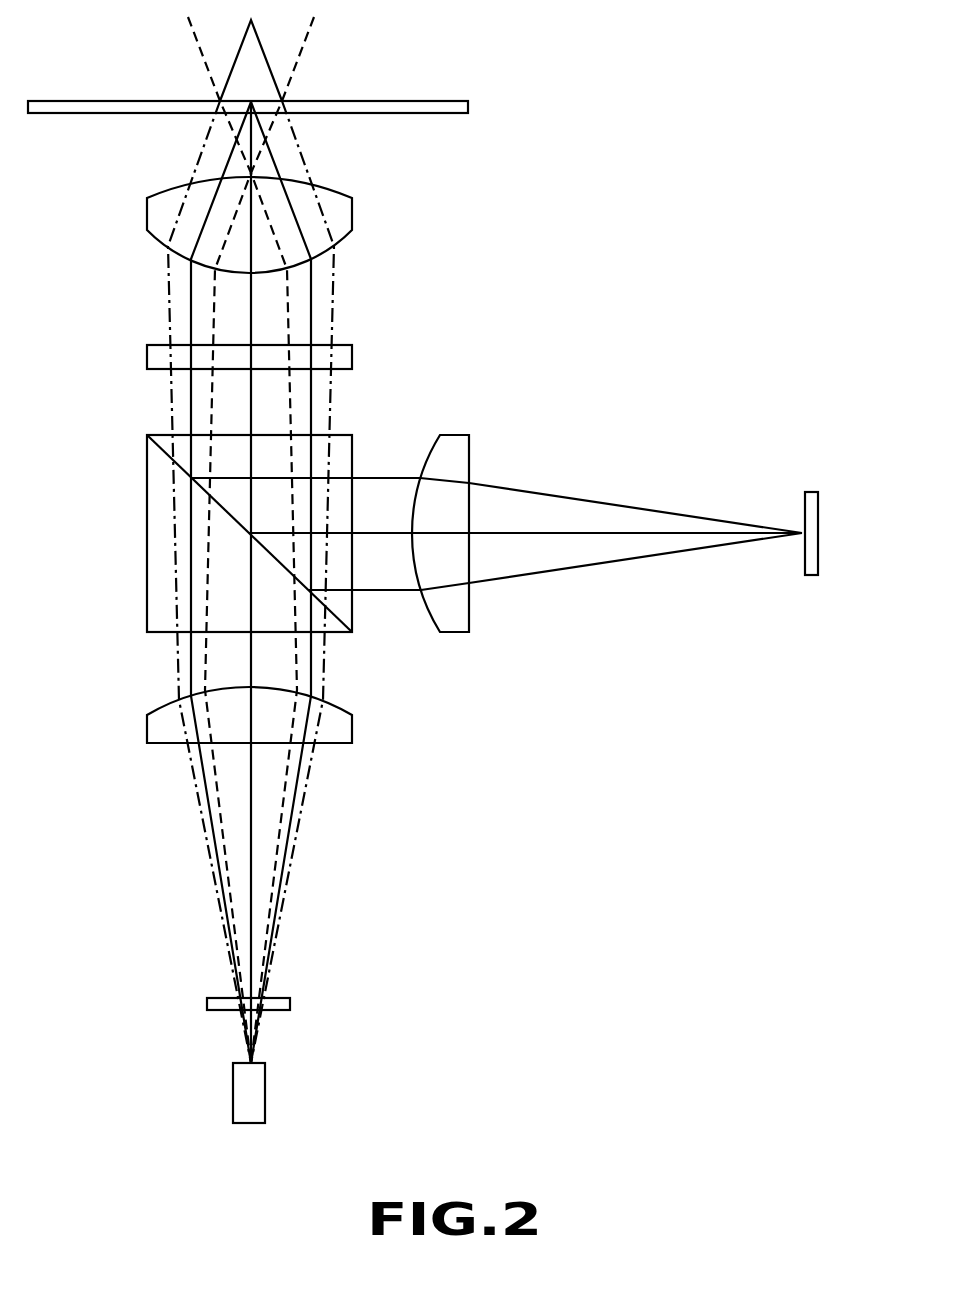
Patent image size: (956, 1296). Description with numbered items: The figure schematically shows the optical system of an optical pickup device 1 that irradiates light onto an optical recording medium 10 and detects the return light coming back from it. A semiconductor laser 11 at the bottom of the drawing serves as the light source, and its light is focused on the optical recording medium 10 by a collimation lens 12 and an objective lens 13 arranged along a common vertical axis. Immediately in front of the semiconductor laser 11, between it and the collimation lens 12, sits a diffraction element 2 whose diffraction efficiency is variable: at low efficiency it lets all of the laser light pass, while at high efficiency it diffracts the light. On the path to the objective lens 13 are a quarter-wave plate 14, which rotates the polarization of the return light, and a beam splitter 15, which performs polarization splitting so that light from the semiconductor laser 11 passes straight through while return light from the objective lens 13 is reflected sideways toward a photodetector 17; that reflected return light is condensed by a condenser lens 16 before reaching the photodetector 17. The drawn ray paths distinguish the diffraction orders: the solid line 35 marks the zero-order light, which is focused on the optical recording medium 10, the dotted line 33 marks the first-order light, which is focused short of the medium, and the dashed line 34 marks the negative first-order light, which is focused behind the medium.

The optical pickup device 1 is at (642, 136).
The diffraction element 2 is at (290, 1004).
The optical recording medium 10 is at (396, 100).
The semiconductor laser 11 is at (265, 1092).
The collimation lens 12 is at (352, 728).
The objective lens 13 is at (352, 212).
The λ/4 plate 14 is at (352, 357).
The beam splitter 15 is at (147, 523).
The condenser lens 16 is at (455, 435).
The photodetector 17 is at (810, 492).
The dotted line 33 is at (285, 785).
The dashed line 34 is at (292, 848).
The solid line 35 is at (295, 818).